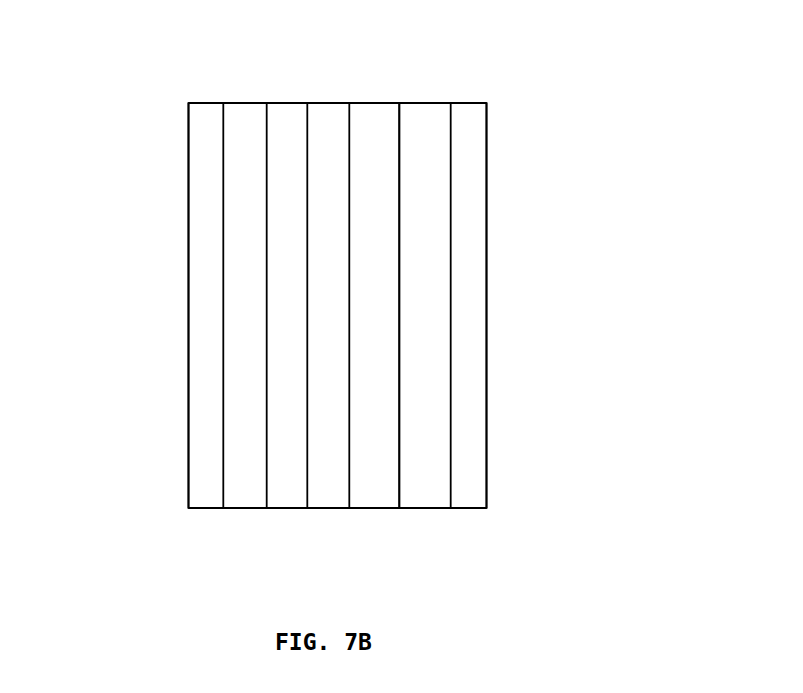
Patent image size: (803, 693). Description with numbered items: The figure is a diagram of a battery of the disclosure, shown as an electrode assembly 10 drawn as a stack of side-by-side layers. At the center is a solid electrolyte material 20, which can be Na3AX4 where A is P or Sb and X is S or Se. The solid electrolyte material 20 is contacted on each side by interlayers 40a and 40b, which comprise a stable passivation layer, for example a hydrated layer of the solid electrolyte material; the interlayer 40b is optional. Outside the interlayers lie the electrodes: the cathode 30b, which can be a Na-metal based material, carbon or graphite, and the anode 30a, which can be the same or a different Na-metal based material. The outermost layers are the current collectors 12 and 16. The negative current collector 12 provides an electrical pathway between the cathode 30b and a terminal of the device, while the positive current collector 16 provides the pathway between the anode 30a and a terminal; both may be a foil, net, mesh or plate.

The electrode assembly 10 is at (158, 70).
The negative current collector 12 is at (200, 297).
The positive current collector 16 is at (473, 313).
The solid electrolyte material 20 is at (333, 117).
The anode 30a is at (433, 227).
The cathode 30b is at (243, 473).
The interlayer 40a is at (373, 493).
The interlayer 40b is at (283, 232).